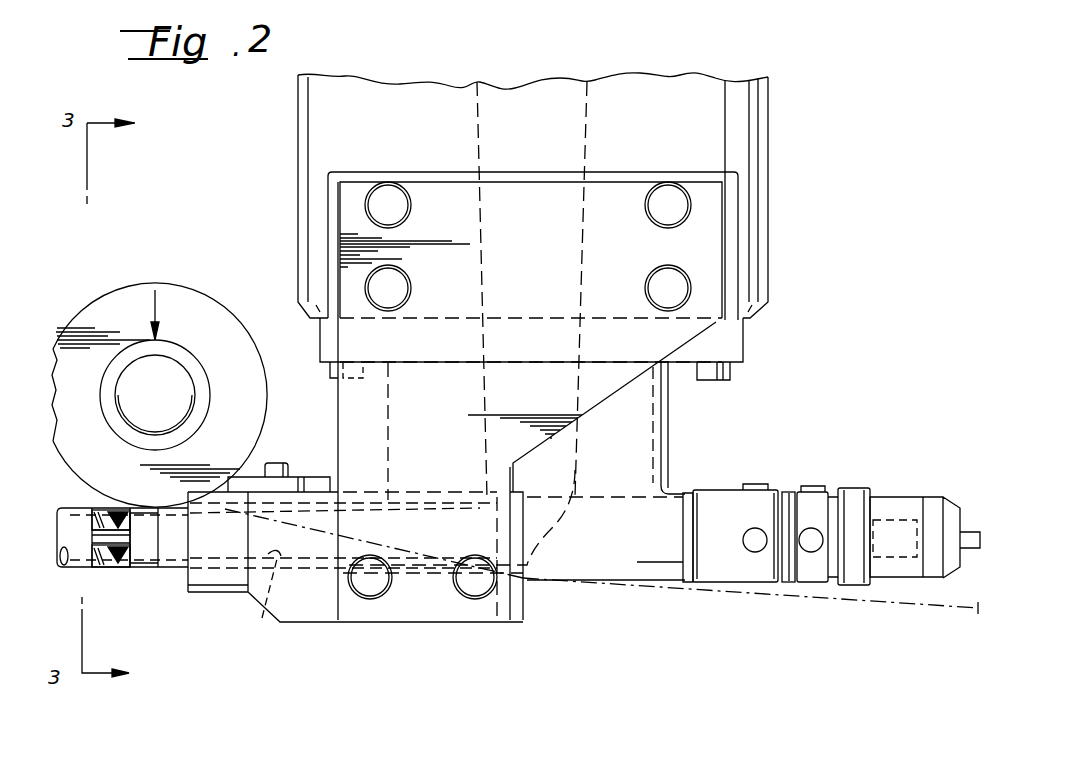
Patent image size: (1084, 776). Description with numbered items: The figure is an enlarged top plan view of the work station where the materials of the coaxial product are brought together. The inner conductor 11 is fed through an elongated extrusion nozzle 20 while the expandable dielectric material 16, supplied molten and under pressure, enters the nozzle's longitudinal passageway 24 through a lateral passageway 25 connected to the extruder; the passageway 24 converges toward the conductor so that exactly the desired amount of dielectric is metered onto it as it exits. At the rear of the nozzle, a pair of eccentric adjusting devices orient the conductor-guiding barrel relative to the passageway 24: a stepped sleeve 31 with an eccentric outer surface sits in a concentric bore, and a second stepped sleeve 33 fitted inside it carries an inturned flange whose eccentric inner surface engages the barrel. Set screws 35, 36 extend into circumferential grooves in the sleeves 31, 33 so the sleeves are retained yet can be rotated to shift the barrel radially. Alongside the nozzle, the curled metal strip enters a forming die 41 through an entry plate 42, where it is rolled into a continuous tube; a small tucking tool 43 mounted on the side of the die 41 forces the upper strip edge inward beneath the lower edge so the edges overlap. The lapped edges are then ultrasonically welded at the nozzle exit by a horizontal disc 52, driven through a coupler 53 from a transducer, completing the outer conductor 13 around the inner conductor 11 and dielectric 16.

The inner conductor 11 is at (98, 540).
The outer conductor 13 is at (108, 565).
The expandable dielectric material 16 is at (122, 560).
The extrusion nozzle 20 is at (585, 582).
The longitudinal passageway 24 is at (255, 597).
The lateral passageway 25 is at (486, 115).
The stepped sleeve 31 is at (790, 585).
The second stepped sleeve 33 is at (858, 585).
The set screw 35 is at (750, 489).
The set screw 36 is at (808, 486).
The forming die 41 is at (370, 622).
The entry plate 42 is at (516, 622).
The tucking tool 43 is at (302, 477).
The horizontal disc 52 is at (186, 264).
The coupler 53 is at (192, 386).